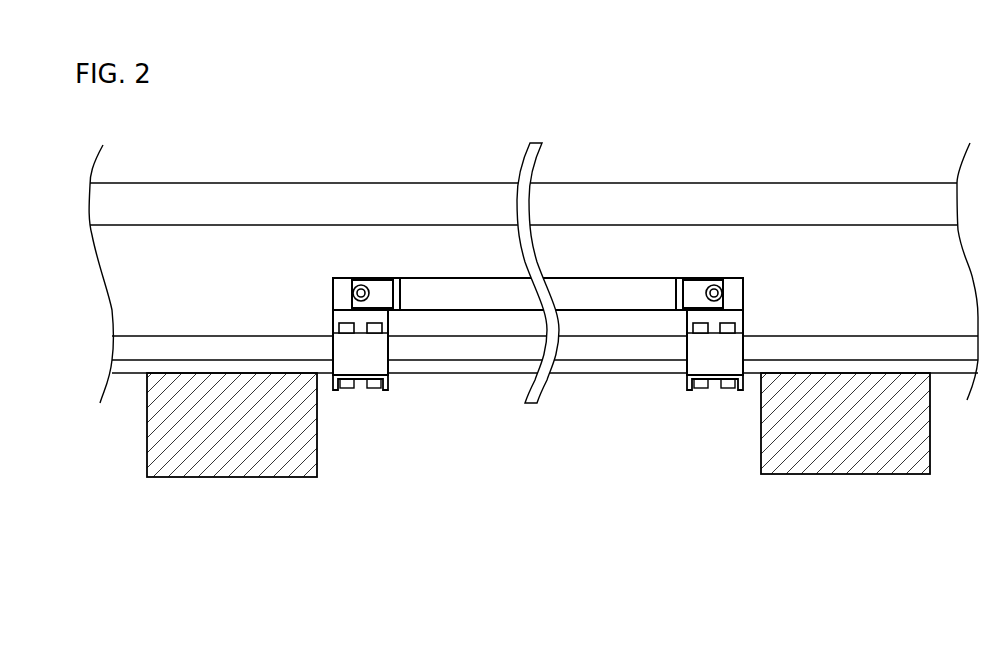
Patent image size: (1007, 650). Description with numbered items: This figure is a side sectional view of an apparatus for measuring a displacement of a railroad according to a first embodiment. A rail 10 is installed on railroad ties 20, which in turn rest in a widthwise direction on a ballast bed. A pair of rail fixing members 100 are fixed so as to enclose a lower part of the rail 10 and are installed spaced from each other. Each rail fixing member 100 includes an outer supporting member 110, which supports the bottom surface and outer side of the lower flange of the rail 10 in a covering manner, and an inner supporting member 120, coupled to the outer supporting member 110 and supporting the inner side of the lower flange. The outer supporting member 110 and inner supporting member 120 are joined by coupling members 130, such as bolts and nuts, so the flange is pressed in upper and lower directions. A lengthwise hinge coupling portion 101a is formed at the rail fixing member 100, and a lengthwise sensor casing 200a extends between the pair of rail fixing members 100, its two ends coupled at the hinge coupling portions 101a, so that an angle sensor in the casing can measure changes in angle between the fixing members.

The rail 10 is at (200, 240).
The railroad tie 20 is at (237, 457).
The rail fixing member 100 is at (268, 590).
The outer supporting member 110 is at (362, 388).
The inner supporting member 120 is at (348, 349).
The coupling member 130 is at (378, 388).
The lengthwise hinge coupling portion 101a is at (375, 256).
The lengthwise sensor casing 200a is at (457, 295).